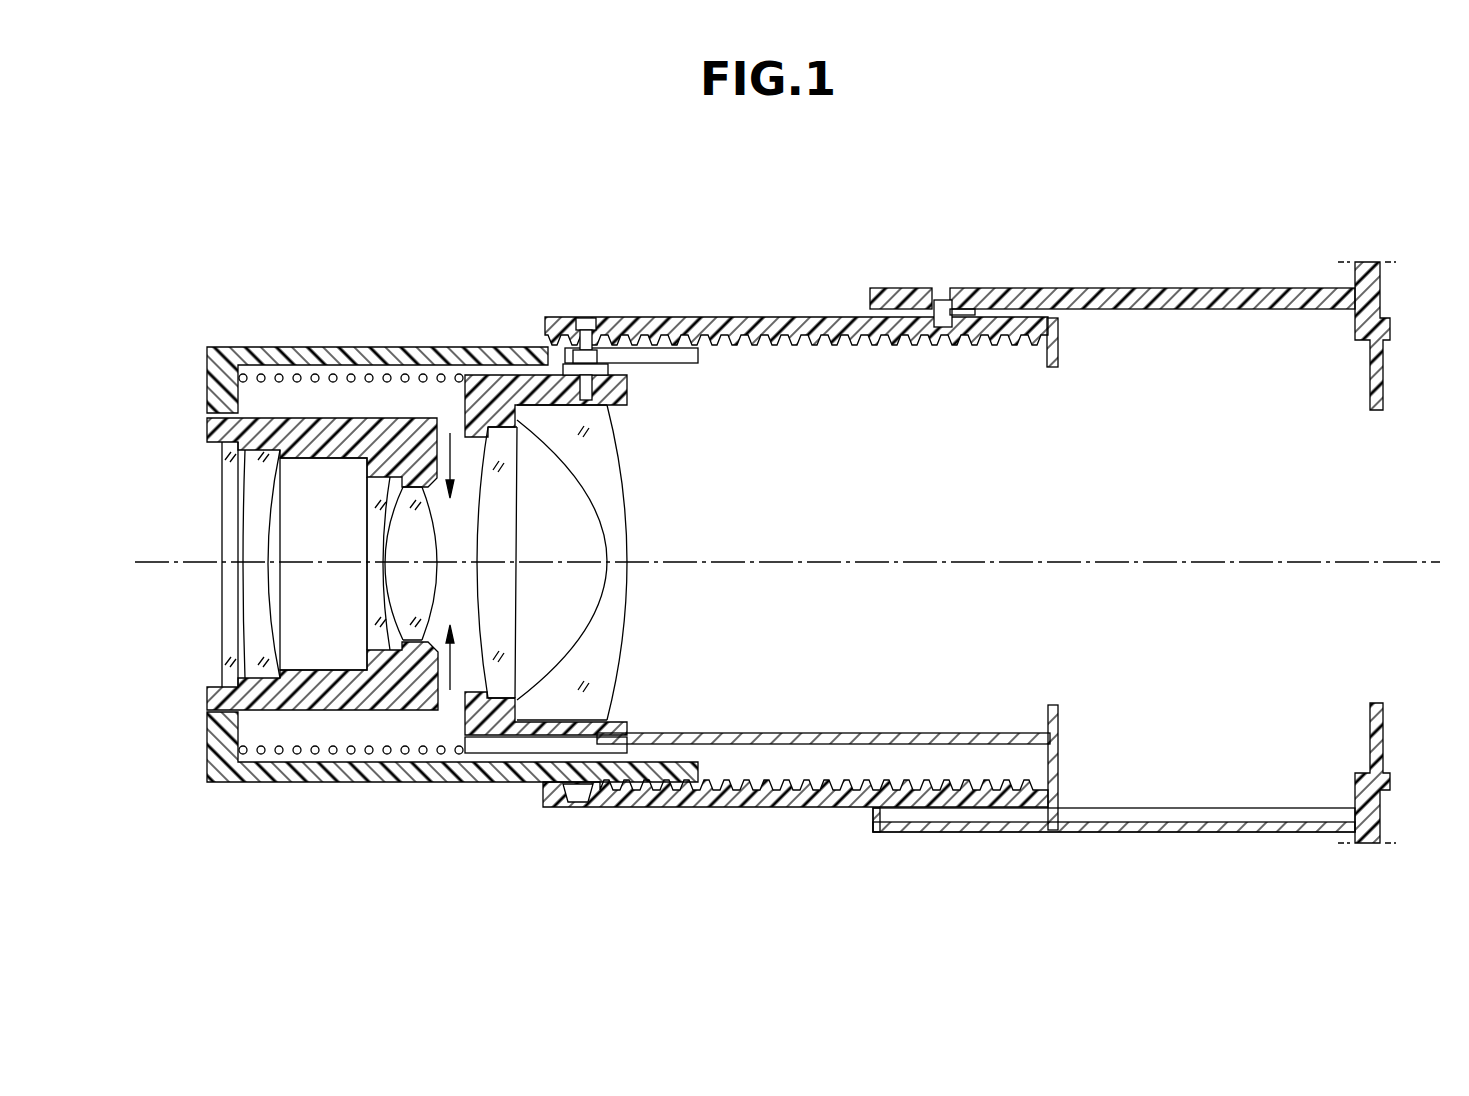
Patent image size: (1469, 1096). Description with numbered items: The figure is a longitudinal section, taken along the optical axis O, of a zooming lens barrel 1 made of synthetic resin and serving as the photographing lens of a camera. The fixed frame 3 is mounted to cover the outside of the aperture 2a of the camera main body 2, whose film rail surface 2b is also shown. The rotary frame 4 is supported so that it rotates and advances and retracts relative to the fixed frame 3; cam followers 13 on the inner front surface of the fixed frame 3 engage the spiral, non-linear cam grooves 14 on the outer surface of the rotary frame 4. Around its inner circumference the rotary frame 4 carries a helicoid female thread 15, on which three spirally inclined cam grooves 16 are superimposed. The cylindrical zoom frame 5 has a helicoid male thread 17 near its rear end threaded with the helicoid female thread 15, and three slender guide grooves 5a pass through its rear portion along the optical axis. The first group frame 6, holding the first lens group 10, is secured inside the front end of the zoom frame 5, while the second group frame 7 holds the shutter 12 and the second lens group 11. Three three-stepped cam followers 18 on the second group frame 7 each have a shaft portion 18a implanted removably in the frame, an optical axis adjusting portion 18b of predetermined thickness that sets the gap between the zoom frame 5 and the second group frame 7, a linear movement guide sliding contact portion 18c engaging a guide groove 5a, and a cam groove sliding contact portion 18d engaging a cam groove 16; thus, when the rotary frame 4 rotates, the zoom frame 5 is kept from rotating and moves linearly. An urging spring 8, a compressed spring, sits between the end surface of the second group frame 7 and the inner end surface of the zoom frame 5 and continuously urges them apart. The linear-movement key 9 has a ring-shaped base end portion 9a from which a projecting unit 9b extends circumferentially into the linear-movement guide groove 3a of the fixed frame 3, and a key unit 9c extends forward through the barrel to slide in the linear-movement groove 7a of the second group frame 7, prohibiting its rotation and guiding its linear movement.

The lens barrel 1 is at (797, 177).
The camera main body 2 is at (1378, 818).
The aperture 2a is at (1377, 704).
The film rail surface 2b is at (1392, 780).
The fixed frame 3 is at (1185, 288).
The linear-movement guide groove 3a is at (1168, 808).
The rotary frame 4 is at (770, 317).
The zoom frame 5 is at (290, 347).
The guide grooves 5a is at (686, 364).
The first group frame 6 is at (258, 428).
The second group frame 7 is at (470, 405).
The linear-movement groove 7a is at (495, 748).
The urging spring 8 is at (285, 758).
The linear-movement key 9 is at (1066, 738).
The base end portion 9a is at (1058, 345).
The projecting unit 9b is at (1053, 833).
The key unit 9c is at (885, 733).
The first lens group 10 is at (368, 606).
The second lens group 11 is at (503, 615).
The shutter 12 is at (438, 697).
The cam followers 13 is at (938, 306).
The cam grooves 14 is at (962, 312).
The helicoid female thread 15 is at (832, 345).
The cam grooves 16 is at (588, 323).
The helicoid male thread 17 is at (652, 336).
The cam followers 18 is at (496, 277).
The shaft portion 18a is at (564, 369).
The optical axis adjusting portion 18b is at (576, 356).
The linear movement guide sliding contact portion 18c is at (582, 345).
The cam groove sliding contact portion 18d is at (582, 322).
The optical axis O is at (142, 562).